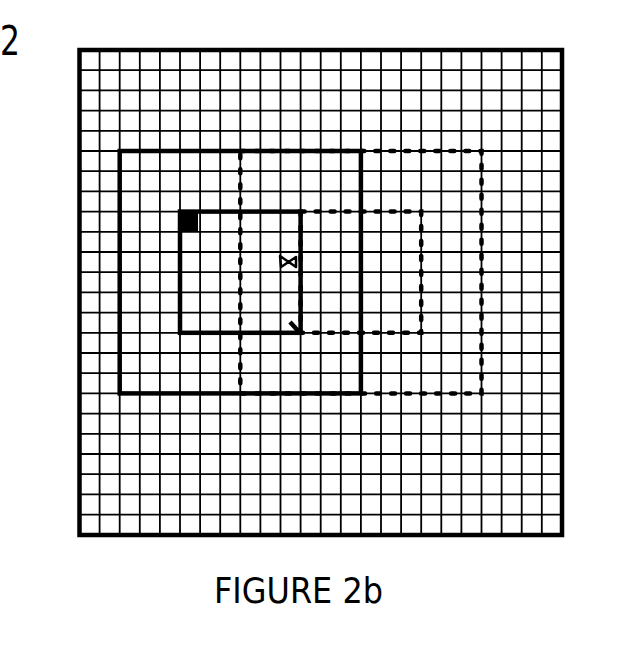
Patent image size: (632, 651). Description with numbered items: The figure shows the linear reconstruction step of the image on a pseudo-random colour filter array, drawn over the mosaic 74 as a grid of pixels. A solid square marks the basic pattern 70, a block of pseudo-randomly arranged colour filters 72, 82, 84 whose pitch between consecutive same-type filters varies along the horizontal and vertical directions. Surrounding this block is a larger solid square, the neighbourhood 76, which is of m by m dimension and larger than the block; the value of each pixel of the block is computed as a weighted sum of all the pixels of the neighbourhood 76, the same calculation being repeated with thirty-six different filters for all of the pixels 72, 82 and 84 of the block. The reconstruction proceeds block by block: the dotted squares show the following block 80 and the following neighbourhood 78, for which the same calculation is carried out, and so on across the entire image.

The basic pattern 70 is at (259, 209).
The colour filter 72 is at (183, 211).
The mosaic 74 is at (78, 443).
The neighbourhood of pixels 76 is at (167, 148).
The following neighbourhood 78 is at (448, 394).
The following block 80 is at (420, 248).
The colour filter 82 is at (297, 262).
The colour filter 84 is at (288, 322).